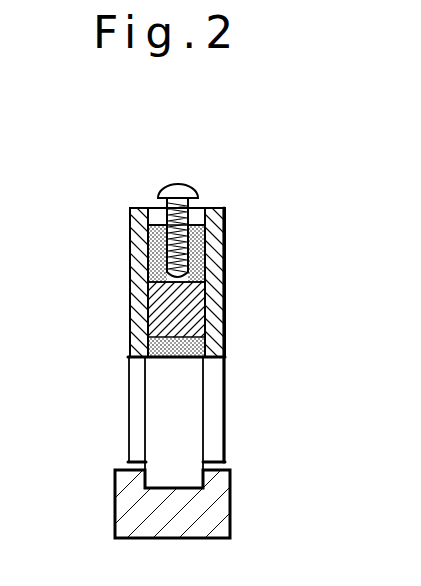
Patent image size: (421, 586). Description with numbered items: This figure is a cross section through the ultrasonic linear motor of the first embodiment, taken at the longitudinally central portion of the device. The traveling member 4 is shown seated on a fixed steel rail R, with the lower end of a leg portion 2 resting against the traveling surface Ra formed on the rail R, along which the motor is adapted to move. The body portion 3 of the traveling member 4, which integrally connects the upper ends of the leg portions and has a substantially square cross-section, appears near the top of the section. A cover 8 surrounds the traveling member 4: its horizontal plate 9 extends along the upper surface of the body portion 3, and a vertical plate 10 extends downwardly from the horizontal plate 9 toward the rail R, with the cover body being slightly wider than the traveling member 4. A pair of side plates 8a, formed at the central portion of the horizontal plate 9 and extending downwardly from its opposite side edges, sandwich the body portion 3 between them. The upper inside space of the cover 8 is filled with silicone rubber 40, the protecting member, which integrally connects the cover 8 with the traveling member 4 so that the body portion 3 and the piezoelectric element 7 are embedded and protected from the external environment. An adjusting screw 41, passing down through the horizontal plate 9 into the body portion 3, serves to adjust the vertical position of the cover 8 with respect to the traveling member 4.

The leg portion 2 is at (160, 430).
The body portion 3 is at (187, 320).
The traveling member 4 is at (136, 388).
The piezoelectric element 7 is at (150, 256).
The cover 8 is at (126, 210).
The side plate 8a is at (135, 302).
The horizontal plate 9 is at (207, 217).
The vertical plate 10 is at (215, 420).
The silicone rubber 40 is at (210, 243).
The adjusting screw 41 is at (172, 186).
The rail R is at (200, 517).
The traveling surface Ra is at (172, 485).